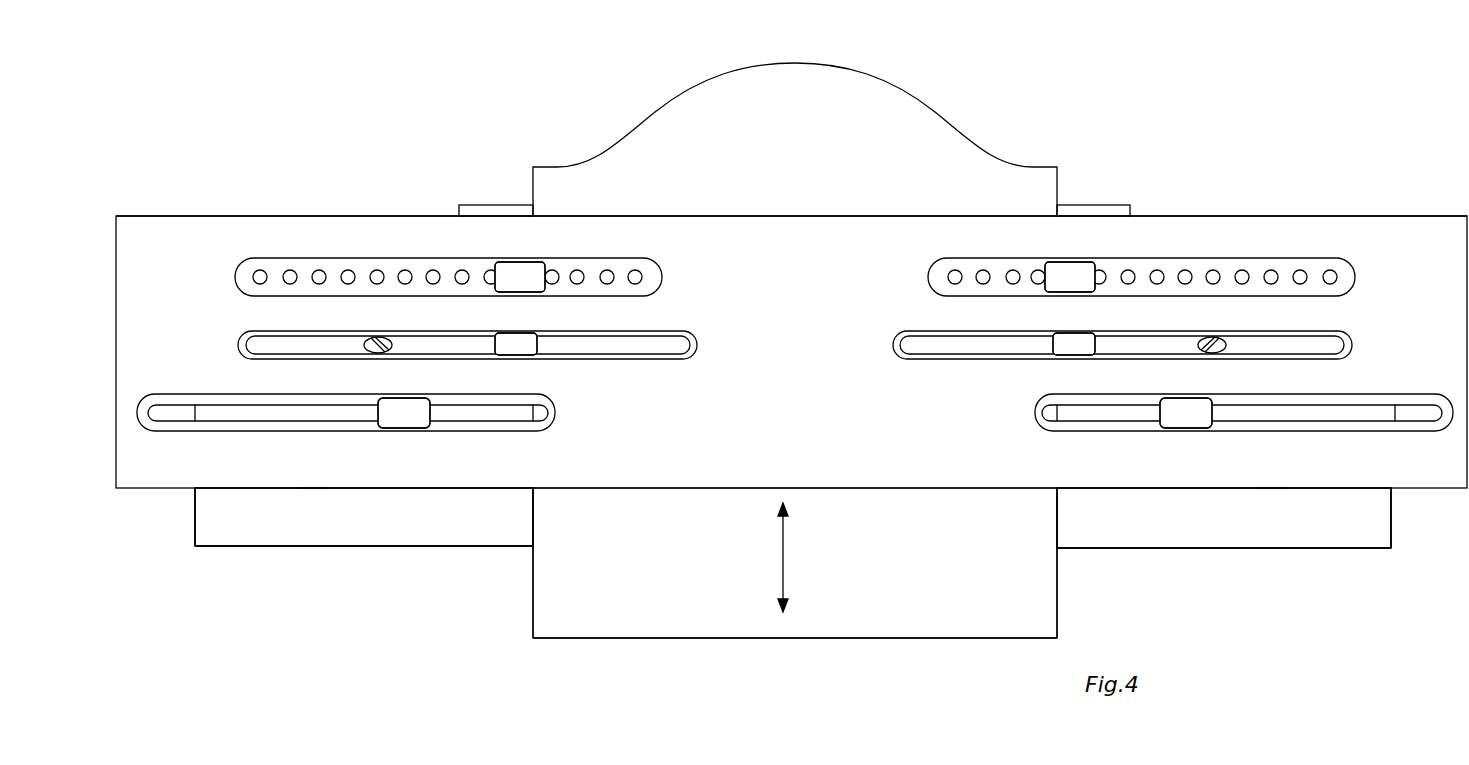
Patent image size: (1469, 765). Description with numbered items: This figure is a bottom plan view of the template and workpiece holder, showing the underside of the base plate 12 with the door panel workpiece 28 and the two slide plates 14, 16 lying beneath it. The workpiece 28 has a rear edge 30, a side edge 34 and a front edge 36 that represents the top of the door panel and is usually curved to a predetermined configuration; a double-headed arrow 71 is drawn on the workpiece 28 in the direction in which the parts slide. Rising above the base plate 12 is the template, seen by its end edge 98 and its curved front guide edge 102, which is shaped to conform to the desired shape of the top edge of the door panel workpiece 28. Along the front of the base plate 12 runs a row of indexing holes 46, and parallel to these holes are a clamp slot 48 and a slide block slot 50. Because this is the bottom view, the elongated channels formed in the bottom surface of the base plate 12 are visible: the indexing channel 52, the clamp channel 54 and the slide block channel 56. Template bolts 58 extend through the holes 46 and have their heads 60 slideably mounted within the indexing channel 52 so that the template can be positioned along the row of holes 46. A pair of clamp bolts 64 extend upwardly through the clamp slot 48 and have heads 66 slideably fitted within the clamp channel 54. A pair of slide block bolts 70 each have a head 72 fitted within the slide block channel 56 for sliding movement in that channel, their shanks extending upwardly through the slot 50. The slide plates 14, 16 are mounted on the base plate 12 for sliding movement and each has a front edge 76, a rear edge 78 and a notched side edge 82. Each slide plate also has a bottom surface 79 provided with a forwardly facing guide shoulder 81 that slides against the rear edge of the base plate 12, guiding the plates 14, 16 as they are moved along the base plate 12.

The base plate 12 is at (1226, 489).
The slide plate 14 is at (1226, 548).
The slide plate 16 is at (363, 546).
The door panel workpiece 28 is at (1057, 613).
The rear edge 30 is at (1013, 638).
The side edge 34 is at (533, 597).
The front edge 36 is at (795, 114).
The indexing holes 46 is at (348, 268).
The clamp slot 48 is at (255, 360).
The slide block slot 50 is at (160, 432).
The indexing channel 52 is at (248, 296).
The clamp channel 54 is at (688, 360).
The slide block channel 56 is at (545, 432).
The template bolts 58 is at (515, 266).
The heads of template bolts 60 is at (530, 275).
The clamp bolts 64 is at (524, 354).
The heads of clamp bolts 66 is at (513, 352).
The slide block bolts 70 is at (395, 428).
The direction arrow 71 is at (785, 598).
The head of slide block bolt 72 is at (410, 428).
The front edge of slide plate 76 is at (373, 214).
The rear edge of slide plate 78 is at (287, 546).
The bottom surface of slide plate 79 is at (417, 531).
The guide shoulder 81 is at (315, 488).
The notched side edge 82 is at (195, 520).
The end edge of template 98 is at (459, 211).
The front guide edge 102 is at (835, 62).